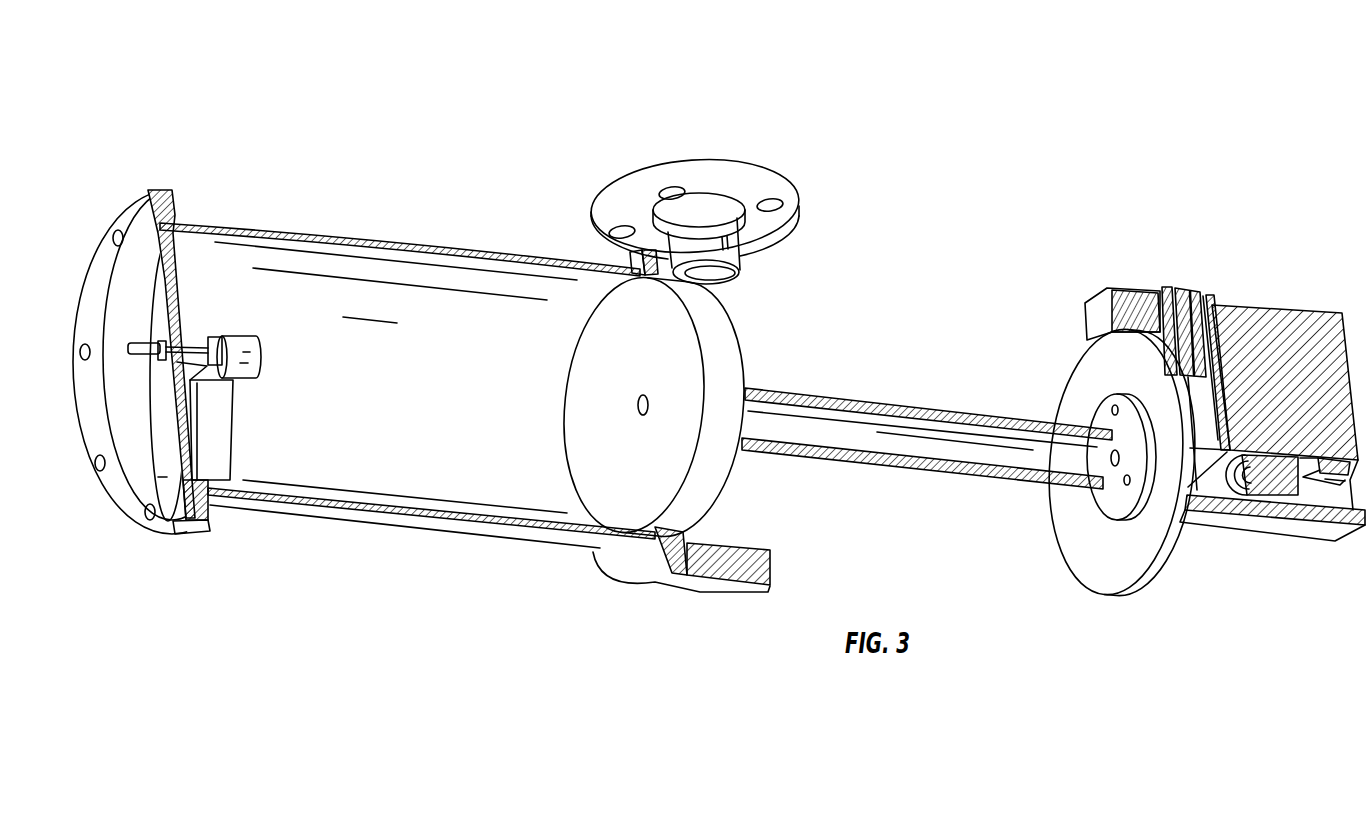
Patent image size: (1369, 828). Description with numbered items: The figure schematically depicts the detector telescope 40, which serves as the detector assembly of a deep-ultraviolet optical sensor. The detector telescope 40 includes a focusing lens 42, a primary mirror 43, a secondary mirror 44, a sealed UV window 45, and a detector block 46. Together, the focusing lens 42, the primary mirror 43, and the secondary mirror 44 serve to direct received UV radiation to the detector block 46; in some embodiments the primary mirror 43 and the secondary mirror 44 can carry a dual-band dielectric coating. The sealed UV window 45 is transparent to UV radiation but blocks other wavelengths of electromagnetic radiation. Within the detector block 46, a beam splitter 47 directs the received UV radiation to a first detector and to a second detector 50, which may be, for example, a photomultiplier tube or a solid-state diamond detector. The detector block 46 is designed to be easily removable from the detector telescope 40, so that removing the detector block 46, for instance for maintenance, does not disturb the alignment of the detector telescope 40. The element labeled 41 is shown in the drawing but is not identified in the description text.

The detector telescope 40 is at (786, 137).
The mounting plate 41 is at (1192, 290).
The focusing lens 42 is at (1108, 440).
The primary mirror 43 is at (622, 320).
The secondary mirror 44 is at (245, 343).
The sealed UV window 45 is at (148, 310).
The detector block 46 is at (1280, 333).
The beam splitter 47 is at (1213, 497).
The second detector 50 is at (1302, 477).